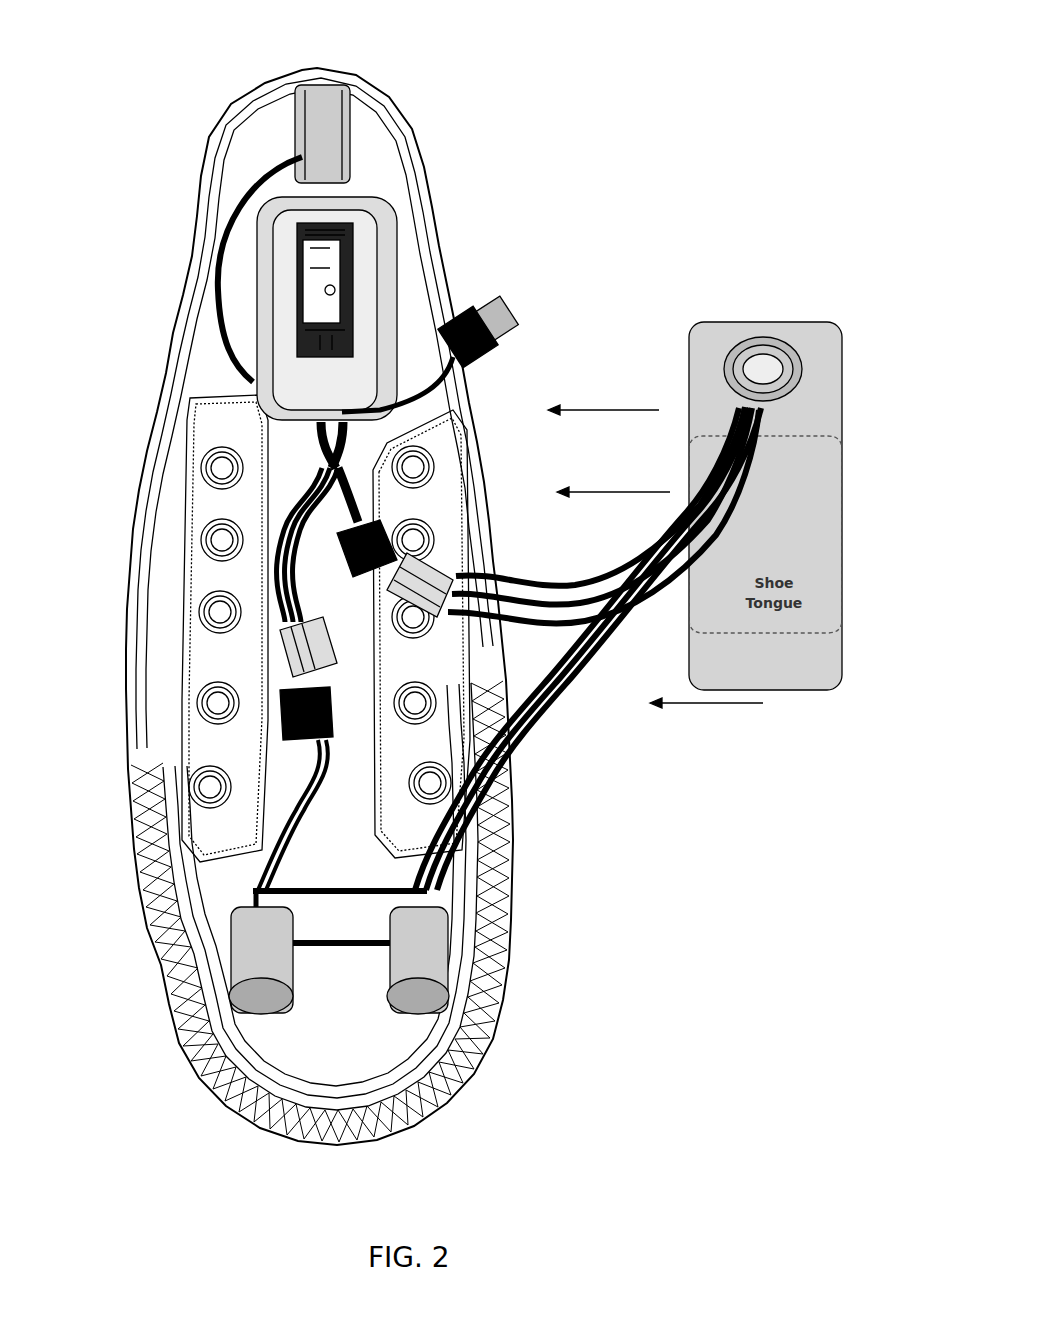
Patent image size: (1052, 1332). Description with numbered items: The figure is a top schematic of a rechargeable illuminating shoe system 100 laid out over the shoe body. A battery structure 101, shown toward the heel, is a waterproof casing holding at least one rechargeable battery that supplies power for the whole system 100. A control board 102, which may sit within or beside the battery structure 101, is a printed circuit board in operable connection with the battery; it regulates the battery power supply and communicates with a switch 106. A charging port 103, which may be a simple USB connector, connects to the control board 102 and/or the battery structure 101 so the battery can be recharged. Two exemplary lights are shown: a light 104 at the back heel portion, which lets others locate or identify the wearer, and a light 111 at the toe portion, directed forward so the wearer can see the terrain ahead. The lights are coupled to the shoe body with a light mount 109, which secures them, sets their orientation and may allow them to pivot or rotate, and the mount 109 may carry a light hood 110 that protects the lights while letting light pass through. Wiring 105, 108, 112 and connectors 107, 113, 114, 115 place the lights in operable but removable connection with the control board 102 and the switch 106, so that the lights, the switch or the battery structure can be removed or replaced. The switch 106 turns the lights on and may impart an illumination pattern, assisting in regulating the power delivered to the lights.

The rechargeable illuminating shoe system 100 is at (160, 85).
The battery structure 101 is at (390, 240).
The control board 102 is at (405, 210).
The charging port 103 is at (497, 307).
The light 104 is at (353, 111).
The wiring 105 is at (288, 514).
The switch 106 is at (802, 354).
The connector 107 is at (345, 543).
The wiring 108 is at (503, 780).
The light mount 109 is at (180, 904).
The light hood 110 is at (417, 951).
The light 111 is at (397, 1007).
The wiring 112 is at (305, 790).
The connector 113 is at (282, 640).
The connector 114 is at (282, 710).
The connector 115 is at (448, 600).